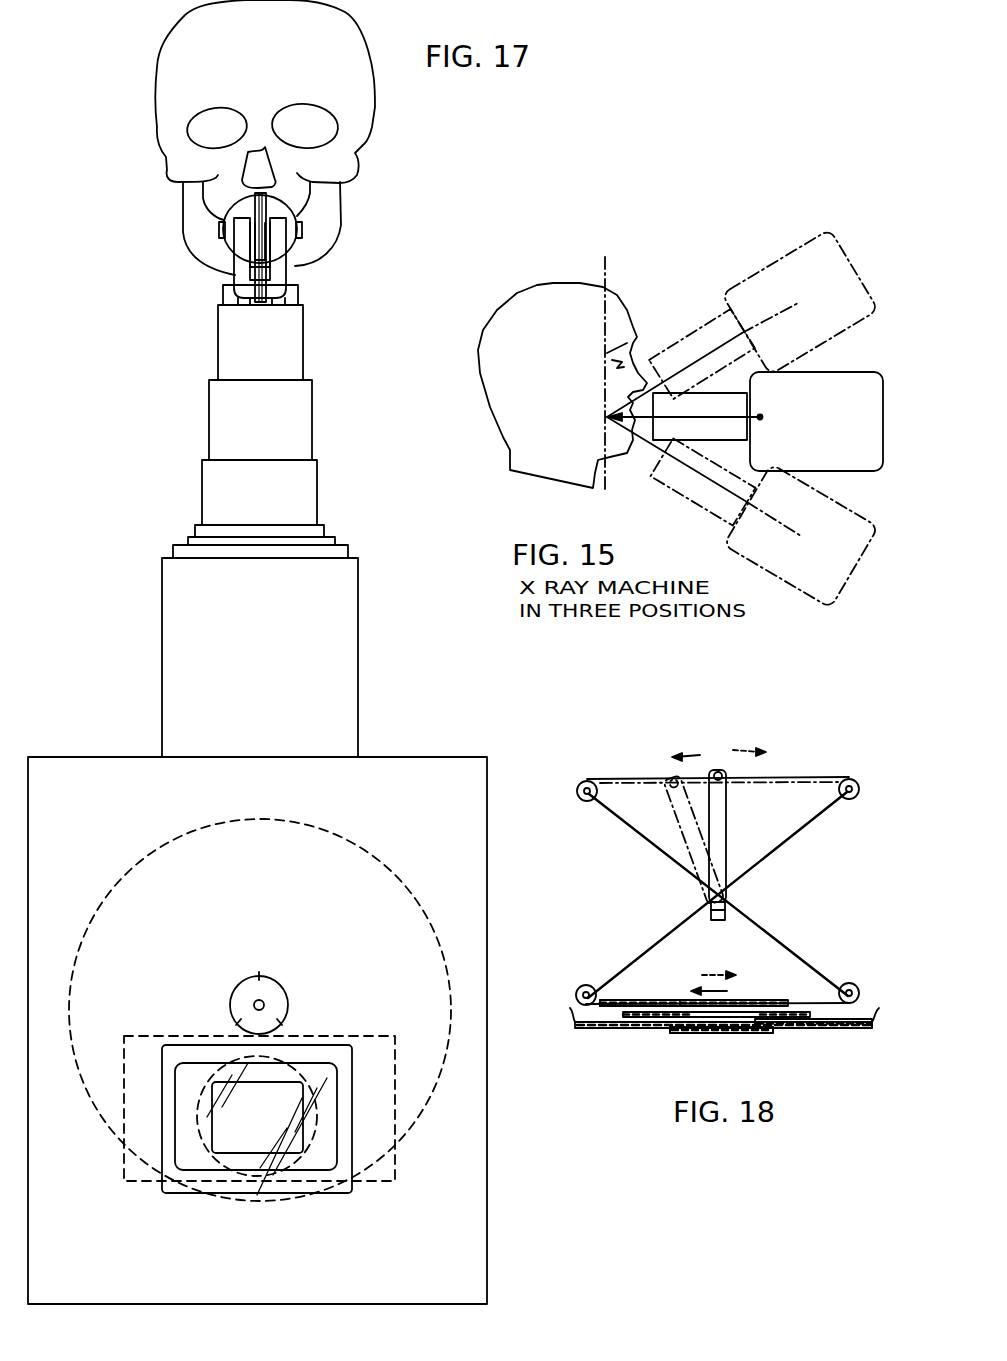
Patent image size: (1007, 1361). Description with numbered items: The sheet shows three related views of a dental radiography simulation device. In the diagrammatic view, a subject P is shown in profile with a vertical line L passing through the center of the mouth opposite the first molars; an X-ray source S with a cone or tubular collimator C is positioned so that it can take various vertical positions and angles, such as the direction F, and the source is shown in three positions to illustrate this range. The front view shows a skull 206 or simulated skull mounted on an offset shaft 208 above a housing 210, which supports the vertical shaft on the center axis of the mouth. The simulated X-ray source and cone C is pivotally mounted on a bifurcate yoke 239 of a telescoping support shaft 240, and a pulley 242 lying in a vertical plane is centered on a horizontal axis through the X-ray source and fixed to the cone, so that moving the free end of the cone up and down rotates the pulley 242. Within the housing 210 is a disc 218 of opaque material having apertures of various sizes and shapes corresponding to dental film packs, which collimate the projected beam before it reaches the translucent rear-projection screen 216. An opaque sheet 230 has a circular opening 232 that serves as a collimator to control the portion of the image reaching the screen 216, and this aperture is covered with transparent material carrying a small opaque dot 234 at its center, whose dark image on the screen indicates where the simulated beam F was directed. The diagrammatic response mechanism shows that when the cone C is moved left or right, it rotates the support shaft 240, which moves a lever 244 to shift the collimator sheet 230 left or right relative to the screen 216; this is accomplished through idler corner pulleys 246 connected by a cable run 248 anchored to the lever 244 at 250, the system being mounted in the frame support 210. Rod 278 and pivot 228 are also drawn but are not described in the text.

In FIG. 17, the skull 206 is at (372, 112).
In FIG. 17, the offset shaft 208 is at (297, 292).
In FIG. 17, the housing 210 is at (430, 766).
In FIG. 18, the housing 210 is at (832, 1028).
In FIG. 18, the translucent rear-projection screen 216 is at (762, 1030).
In FIG. 17, the disc 218 is at (372, 846).
In FIG. 18, the disc 218 is at (680, 1018).
In FIG. 17, the pivot 228 is at (268, 1002).
In FIG. 17, the opaque sheet 230 is at (342, 1190).
In FIG. 18, the opaque sheet 230 is at (670, 988).
In FIG. 17, the circular opening 232 is at (196, 1188).
In FIG. 18, the circular opening 232 is at (738, 1002).
In FIG. 17, the opaque dot 234 is at (258, 1117).
In FIG. 18, the opaque dot 234 is at (718, 1035).
In FIG. 17, the bifurcate yoke 239 is at (240, 270).
In FIG. 17, the telescoping support shaft 240 is at (305, 346).
In FIG. 18, the telescoping support shaft 240 is at (712, 912).
In FIG. 17, the pulley 242 is at (252, 248).
In FIG. 18, the lever 244 is at (724, 826).
In FIG. 18, the idler corner pulleys 246 is at (590, 781).
In FIG. 18, the cable run 248 is at (800, 777).
In FIG. 18, the anchor point 250 is at (718, 768).
In FIG. 17, the rod 278 is at (263, 293).
In FIG. 17, the cone or tubular collimator C is at (300, 212).
In FIG. 15, the cone or tubular collimator C is at (742, 405).
In FIG. 15, the X-ray source S is at (803, 246).
In FIG. 15, the subject P is at (556, 292).
In FIG. 15, the vertical line L is at (609, 268).
In FIG. 15, the direction F is at (652, 458).